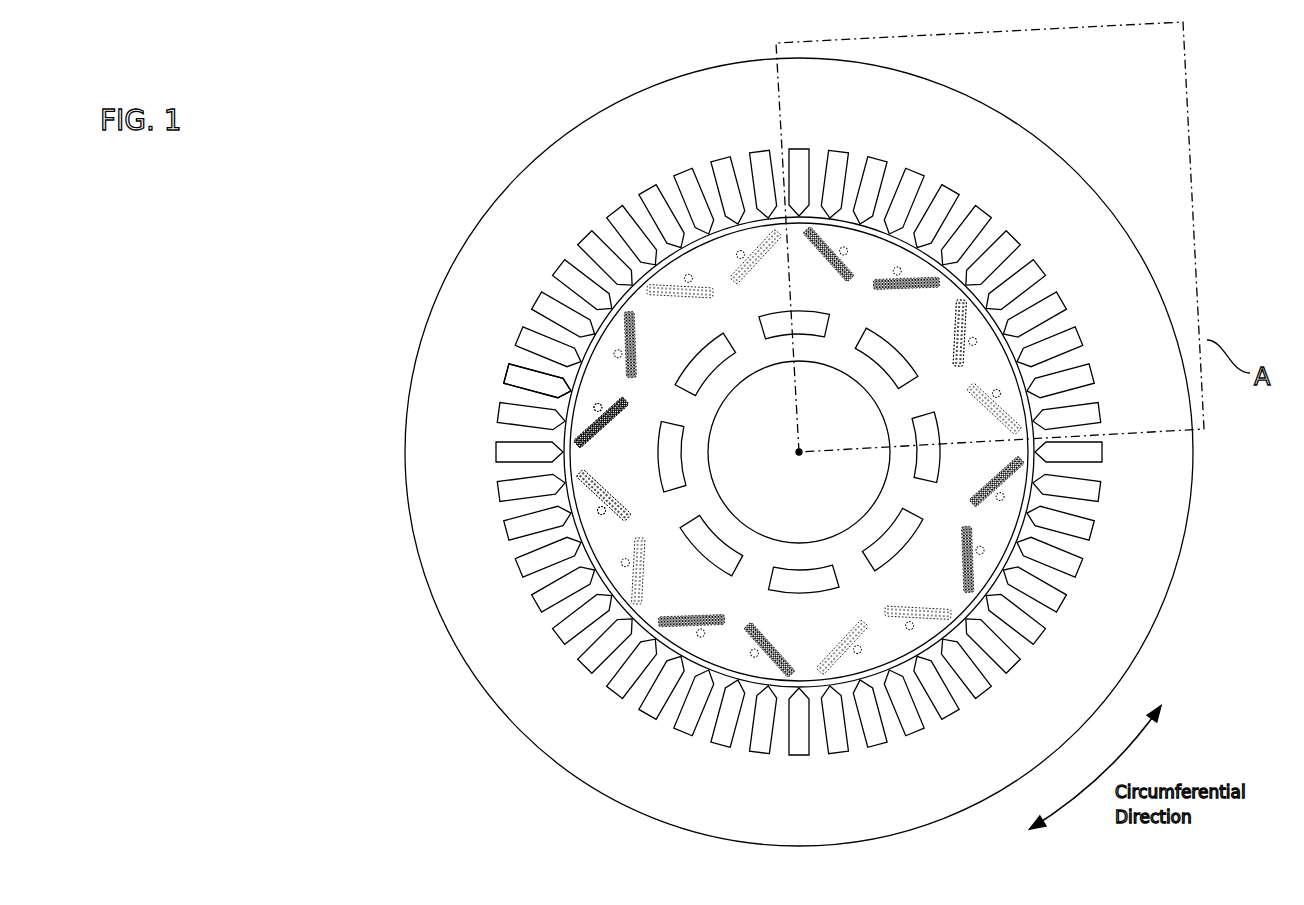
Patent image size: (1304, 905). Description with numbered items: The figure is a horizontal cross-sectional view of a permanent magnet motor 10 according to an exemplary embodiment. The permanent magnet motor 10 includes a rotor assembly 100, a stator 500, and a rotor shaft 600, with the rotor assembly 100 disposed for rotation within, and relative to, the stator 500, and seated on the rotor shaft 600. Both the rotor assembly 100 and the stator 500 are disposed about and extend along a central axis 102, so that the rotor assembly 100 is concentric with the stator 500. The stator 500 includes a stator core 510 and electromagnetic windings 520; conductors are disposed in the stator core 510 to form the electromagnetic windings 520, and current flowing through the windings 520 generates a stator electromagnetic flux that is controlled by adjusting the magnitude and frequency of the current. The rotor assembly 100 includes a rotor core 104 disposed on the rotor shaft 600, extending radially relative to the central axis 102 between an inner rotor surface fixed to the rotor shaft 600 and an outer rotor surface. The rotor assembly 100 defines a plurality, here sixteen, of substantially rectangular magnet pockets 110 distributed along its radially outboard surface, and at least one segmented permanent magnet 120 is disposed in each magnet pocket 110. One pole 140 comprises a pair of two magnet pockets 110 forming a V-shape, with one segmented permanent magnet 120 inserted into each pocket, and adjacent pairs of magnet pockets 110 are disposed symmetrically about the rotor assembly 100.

The permanent magnet motor 10 is at (400, 163).
The rotor assembly 100 is at (799, 452).
The central axis 102 is at (797, 454).
The rotor core 104 is at (843, 340).
The magnet pocket 110 is at (875, 286).
The segmented permanent magnet 120 is at (957, 320).
The pole 140 is at (641, 386).
The stator 500 is at (437, 615).
The stator core 510 is at (497, 250).
The electromagnetic windings 520 is at (523, 375).
The rotor shaft 600 is at (780, 431).